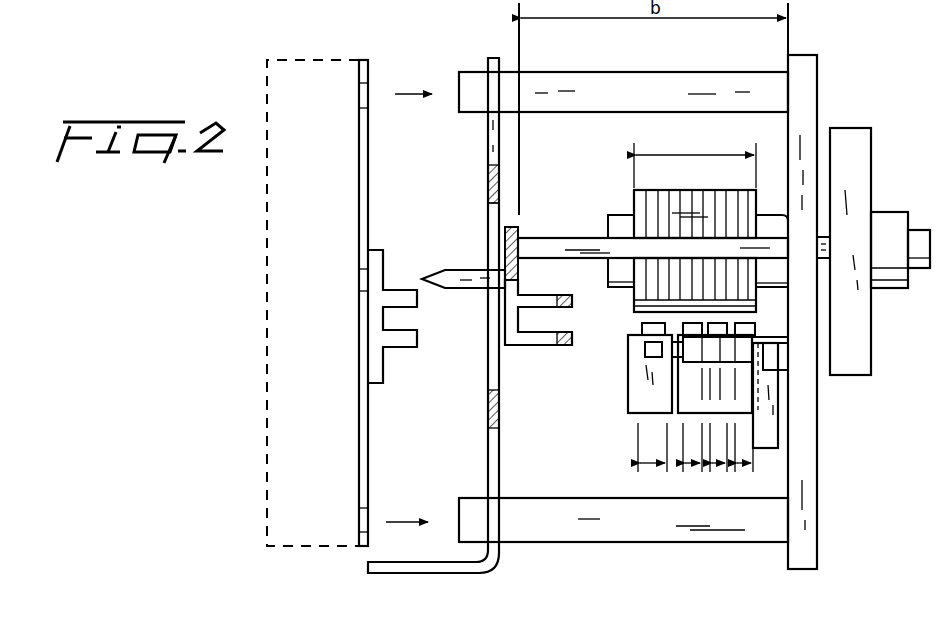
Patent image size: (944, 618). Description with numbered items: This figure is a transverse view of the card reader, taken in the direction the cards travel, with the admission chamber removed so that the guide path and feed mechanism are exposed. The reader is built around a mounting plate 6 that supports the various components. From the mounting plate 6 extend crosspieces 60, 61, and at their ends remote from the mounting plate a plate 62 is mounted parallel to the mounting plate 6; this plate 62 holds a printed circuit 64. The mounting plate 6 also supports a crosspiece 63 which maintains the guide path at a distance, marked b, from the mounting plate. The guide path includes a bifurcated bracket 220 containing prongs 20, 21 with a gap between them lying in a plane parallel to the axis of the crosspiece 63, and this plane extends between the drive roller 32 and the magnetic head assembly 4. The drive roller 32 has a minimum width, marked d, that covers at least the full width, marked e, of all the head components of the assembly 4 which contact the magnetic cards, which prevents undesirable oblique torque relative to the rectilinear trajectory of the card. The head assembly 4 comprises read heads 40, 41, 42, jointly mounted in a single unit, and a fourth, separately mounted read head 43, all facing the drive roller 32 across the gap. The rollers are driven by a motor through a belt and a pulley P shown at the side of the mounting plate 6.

The magnetic head assembly 4 is at (691, 373).
The mounting plate 6 is at (808, 70).
The prong 20 is at (541, 338).
The prong 21 is at (540, 300).
The drive roller 32 is at (681, 223).
The read head 40 is at (750, 327).
The read head 41 is at (723, 322).
The read head 42 is at (672, 335).
The read head 43 is at (640, 325).
The crosspiece 60 is at (675, 82).
The crosspiece 61 is at (656, 530).
The plate 62 is at (493, 58).
The crosspiece 63 is at (542, 248).
The printed circuit 64 is at (362, 185).
The bifurcated bracket 220 is at (510, 313).
The pulley P is at (857, 164).